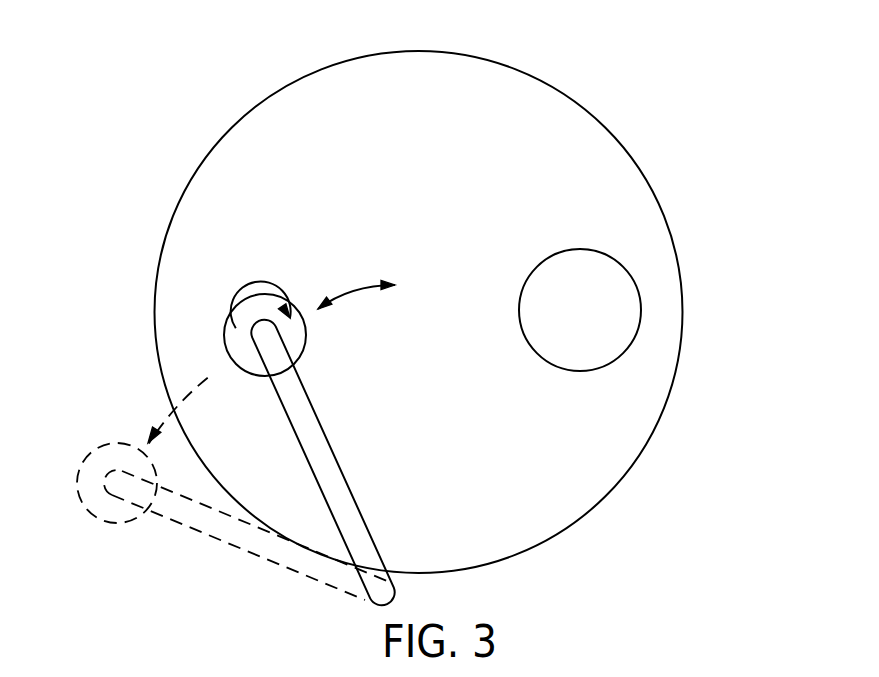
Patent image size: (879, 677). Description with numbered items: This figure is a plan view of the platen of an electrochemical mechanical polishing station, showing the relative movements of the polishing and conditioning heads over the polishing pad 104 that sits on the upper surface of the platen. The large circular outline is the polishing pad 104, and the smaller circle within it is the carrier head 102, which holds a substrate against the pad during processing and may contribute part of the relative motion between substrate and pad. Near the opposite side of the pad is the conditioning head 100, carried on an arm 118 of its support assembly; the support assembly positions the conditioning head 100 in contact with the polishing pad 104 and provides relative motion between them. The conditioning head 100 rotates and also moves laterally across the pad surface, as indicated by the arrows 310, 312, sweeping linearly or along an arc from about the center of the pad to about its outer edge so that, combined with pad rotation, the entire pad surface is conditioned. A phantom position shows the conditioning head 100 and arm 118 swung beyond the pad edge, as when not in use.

The conditioning head 100 is at (223, 298).
The carrier head 102 is at (600, 225).
The polishing pad 104 is at (322, 120).
The arm 118 is at (312, 407).
The arrow 310 is at (350, 290).
The arrow 312 is at (231, 318).